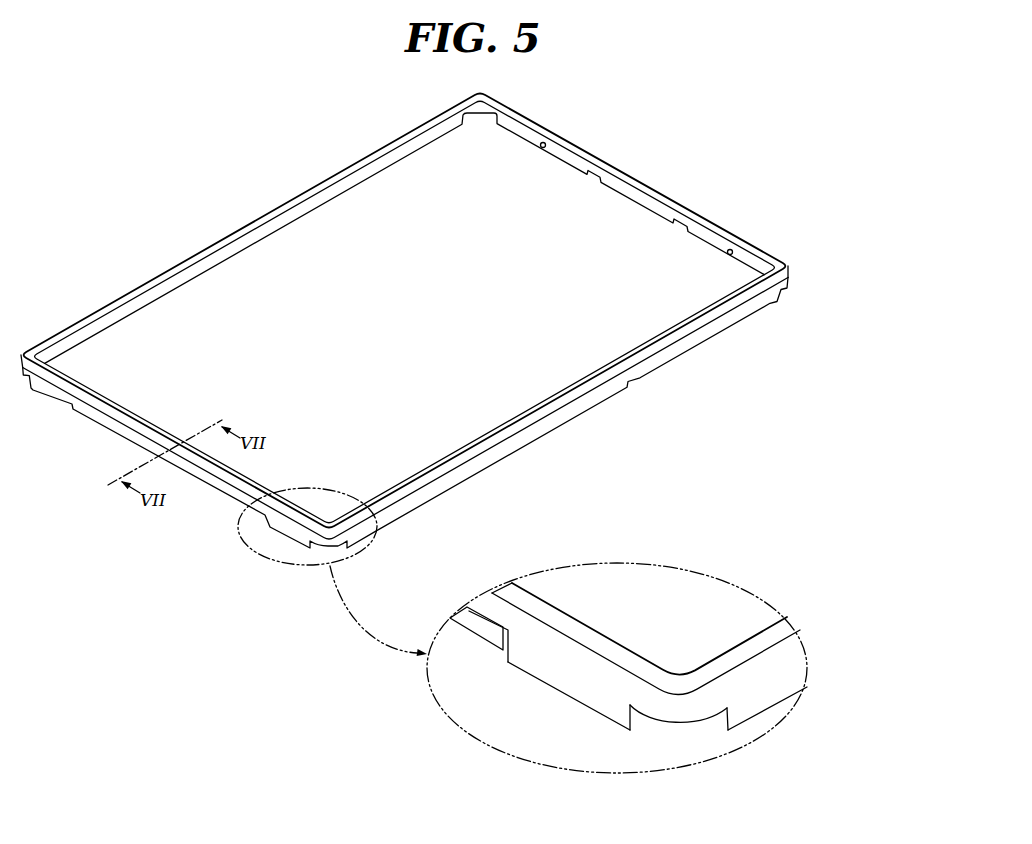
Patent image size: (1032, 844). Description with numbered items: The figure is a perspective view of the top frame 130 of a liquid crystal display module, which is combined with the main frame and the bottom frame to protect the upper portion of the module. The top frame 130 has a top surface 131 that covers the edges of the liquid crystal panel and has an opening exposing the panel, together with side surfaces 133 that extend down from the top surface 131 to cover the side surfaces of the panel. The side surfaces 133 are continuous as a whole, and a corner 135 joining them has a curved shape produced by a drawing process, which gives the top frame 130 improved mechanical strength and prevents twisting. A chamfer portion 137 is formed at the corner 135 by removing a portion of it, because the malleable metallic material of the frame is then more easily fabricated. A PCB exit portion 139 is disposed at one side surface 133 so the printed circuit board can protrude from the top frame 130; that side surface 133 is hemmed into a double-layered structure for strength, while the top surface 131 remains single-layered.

The top frame 130 is at (710, 136).
The top surface 131 is at (761, 642).
The side surface 133 is at (793, 666).
The corner 135 is at (700, 702).
The chamfer portion 137 is at (683, 742).
The PCB exit portion 139 is at (468, 645).